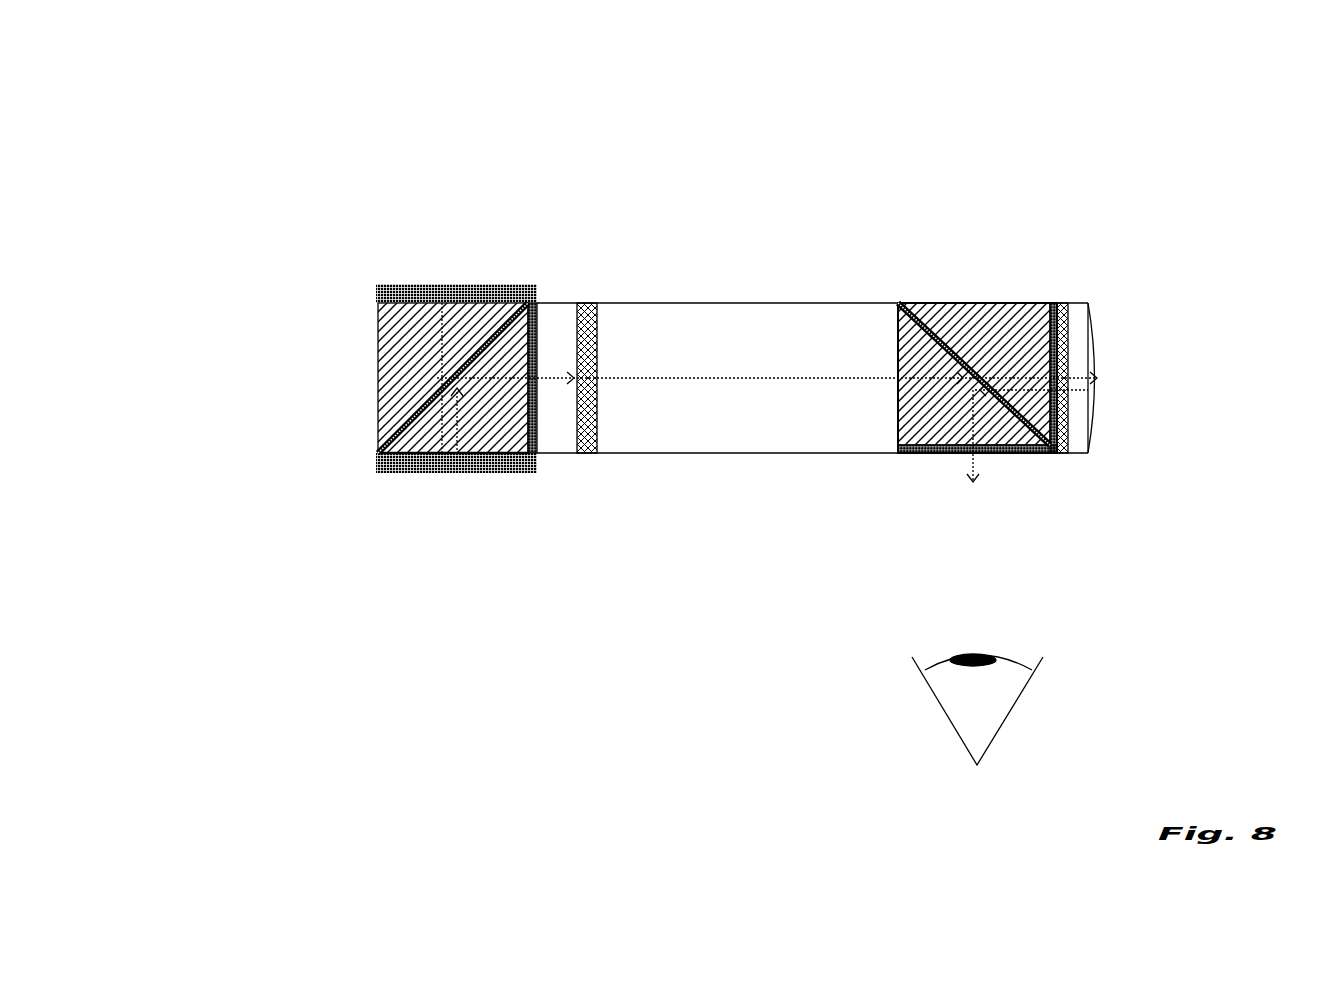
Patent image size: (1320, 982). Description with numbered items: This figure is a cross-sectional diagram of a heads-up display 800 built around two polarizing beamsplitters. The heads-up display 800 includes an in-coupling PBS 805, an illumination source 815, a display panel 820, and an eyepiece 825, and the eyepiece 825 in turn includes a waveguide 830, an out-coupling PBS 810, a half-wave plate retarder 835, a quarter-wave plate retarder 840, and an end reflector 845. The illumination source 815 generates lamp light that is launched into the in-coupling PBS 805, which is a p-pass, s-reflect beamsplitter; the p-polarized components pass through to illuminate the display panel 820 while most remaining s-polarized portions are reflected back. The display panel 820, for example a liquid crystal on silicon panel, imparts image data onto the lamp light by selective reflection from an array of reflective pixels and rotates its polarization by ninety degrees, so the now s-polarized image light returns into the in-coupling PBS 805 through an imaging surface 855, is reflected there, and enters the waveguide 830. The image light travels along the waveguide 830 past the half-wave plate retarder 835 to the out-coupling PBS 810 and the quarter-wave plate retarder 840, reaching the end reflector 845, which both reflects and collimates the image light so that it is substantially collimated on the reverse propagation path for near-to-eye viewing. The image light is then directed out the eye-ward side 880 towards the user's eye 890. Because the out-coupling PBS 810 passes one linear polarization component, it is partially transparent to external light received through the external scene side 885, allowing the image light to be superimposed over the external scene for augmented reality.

The heads-up display 800 is at (270, 97).
The in-coupling PBS 805 is at (323, 383).
The out-coupling PBS 810 is at (1057, 490).
The illumination source 815 is at (397, 283).
The display panel 820 is at (375, 463).
The eyepiece 825 is at (1098, 208).
The waveguide 830 is at (897, 490).
The half-wave plate retarder 835 is at (588, 303).
The quarter-wave plate retarder 840 is at (1063, 303).
The end reflector 845 is at (1095, 415).
The imaging surface 855 is at (405, 507).
The eye-ward side 880 is at (814, 592).
The external scene side 885 is at (898, 270).
The eye 890 is at (955, 707).